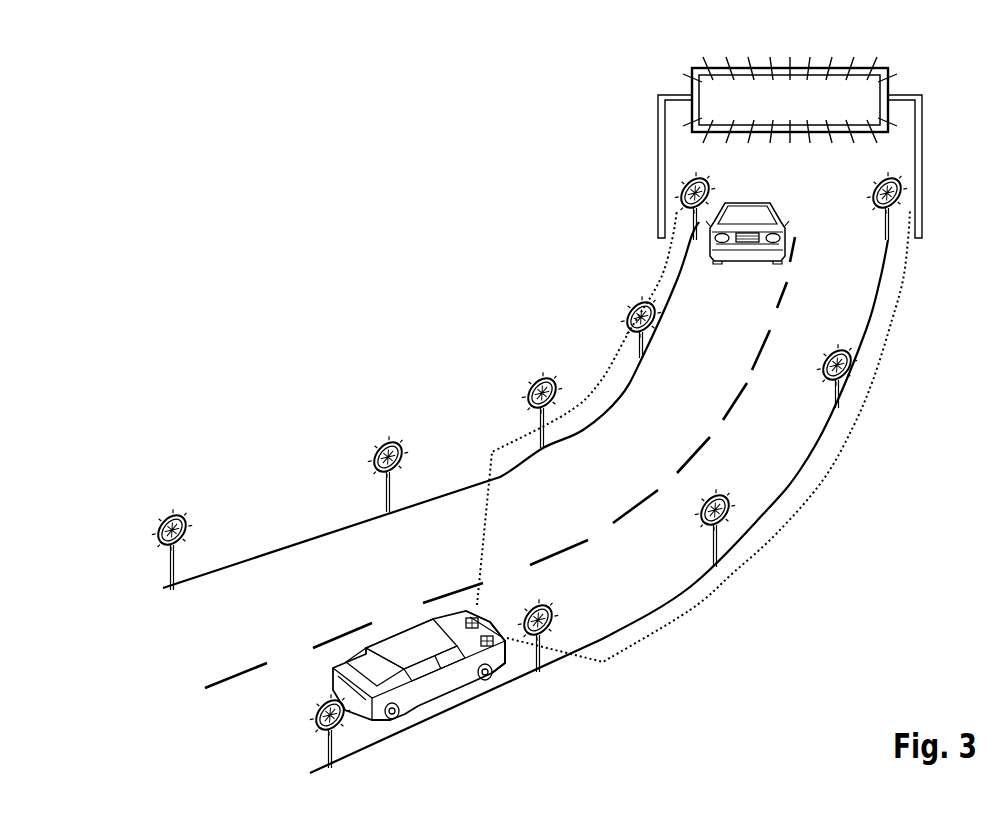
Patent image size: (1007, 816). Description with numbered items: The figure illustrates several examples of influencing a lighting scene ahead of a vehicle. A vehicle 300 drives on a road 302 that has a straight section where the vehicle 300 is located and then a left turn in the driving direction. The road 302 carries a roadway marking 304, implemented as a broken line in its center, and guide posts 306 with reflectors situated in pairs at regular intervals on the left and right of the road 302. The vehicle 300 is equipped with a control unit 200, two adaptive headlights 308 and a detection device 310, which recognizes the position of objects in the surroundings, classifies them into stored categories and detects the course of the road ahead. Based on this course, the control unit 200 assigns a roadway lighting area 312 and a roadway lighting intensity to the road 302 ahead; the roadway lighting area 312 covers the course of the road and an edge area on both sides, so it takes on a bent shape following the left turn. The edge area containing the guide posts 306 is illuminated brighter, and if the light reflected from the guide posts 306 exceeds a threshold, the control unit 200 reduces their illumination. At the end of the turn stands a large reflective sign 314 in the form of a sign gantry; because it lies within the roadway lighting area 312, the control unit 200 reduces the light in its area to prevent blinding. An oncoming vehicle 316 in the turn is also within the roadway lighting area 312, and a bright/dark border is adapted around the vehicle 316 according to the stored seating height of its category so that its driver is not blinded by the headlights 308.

The control unit 200 is at (500, 650).
The vehicle 300 is at (453, 639).
The road 302 is at (329, 557).
The roadway marking 304 is at (217, 682).
The guide posts 306 is at (723, 557).
The adaptive headlights 308 is at (497, 632).
The detection device 310 is at (463, 612).
The roadway lighting area 312 is at (870, 379).
The reflective sign 314 is at (707, 93).
The oncoming vehicle 316 is at (748, 215).